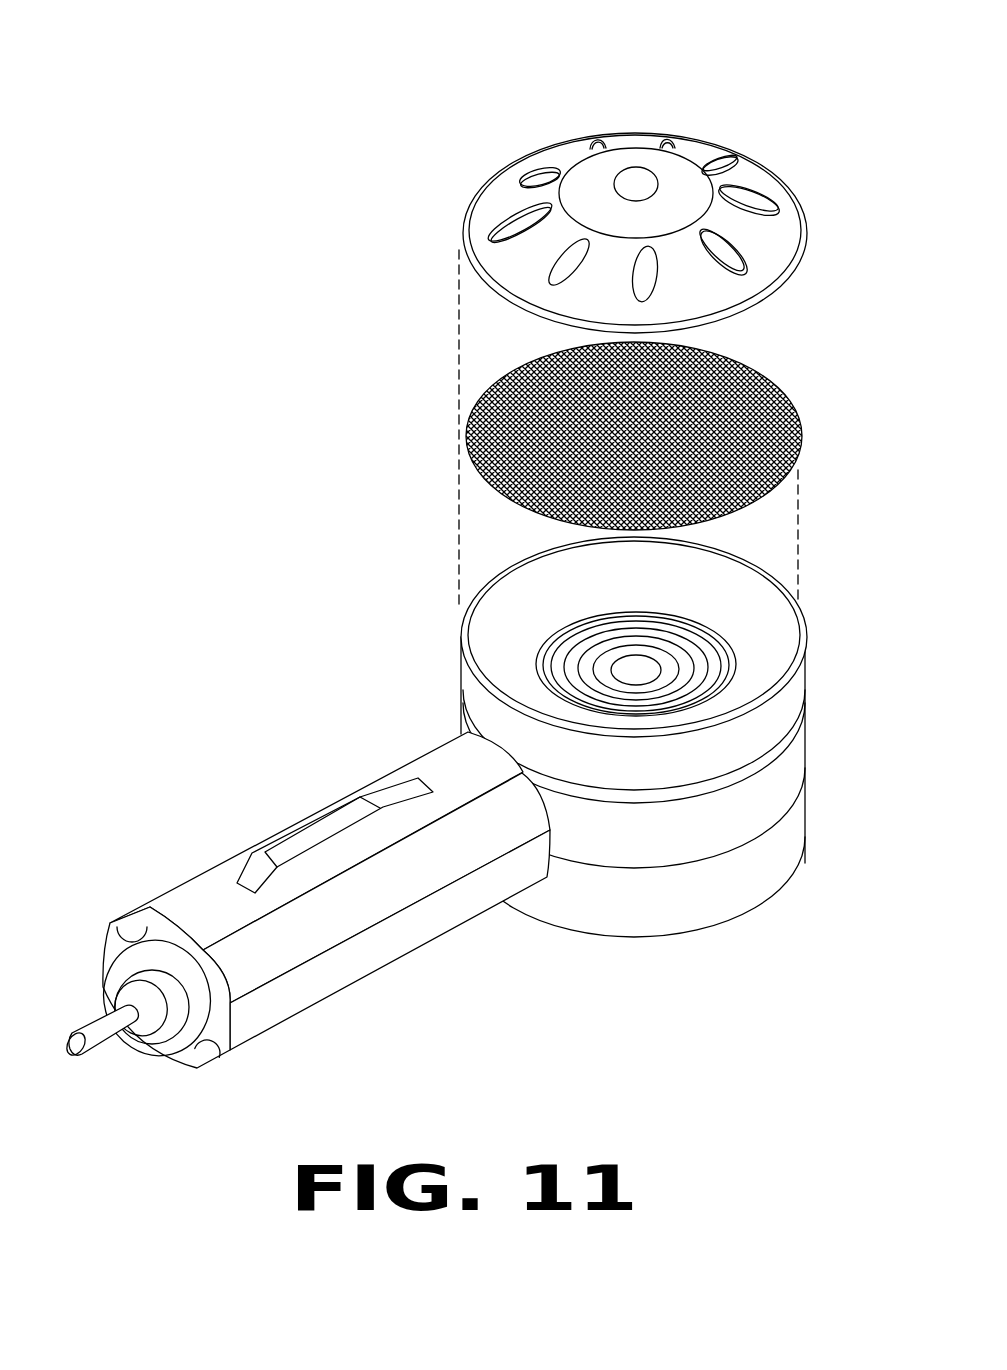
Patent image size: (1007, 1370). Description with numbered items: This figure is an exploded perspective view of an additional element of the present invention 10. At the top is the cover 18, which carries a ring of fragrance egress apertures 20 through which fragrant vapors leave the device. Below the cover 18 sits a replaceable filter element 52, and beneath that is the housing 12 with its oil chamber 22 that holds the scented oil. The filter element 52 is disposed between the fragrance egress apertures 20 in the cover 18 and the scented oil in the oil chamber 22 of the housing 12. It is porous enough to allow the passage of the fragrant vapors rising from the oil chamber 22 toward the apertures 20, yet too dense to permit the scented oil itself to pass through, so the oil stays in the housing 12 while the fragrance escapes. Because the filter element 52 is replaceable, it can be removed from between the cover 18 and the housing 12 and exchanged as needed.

The present invention 10 is at (800, 141).
The housing 12 is at (667, 937).
The cover 18 is at (630, 157).
The fragrance egress apertures 20 is at (536, 175).
The oil chamber 22 is at (488, 618).
The replaceable filter element 52 is at (517, 500).